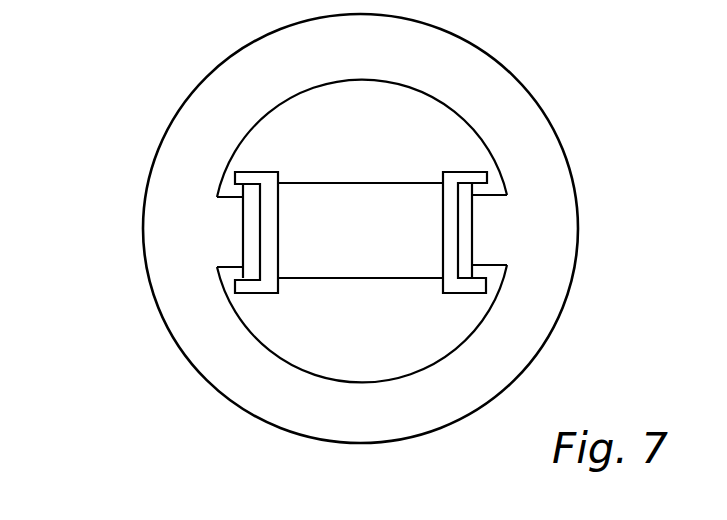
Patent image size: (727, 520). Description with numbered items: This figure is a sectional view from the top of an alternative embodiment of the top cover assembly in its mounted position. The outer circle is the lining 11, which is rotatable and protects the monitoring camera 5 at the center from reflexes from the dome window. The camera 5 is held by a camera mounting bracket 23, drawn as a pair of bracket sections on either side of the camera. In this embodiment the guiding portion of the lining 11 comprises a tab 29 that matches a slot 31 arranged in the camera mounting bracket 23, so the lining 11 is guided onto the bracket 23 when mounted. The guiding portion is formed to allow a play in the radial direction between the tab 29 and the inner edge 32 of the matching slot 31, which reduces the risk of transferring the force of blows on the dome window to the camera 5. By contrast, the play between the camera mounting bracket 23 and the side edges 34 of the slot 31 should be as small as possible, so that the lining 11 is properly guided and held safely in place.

The monitoring camera 5 is at (372, 195).
The lining 11 is at (142, 243).
The camera mounting bracket 23 is at (461, 290).
The tab 29 is at (492, 227).
The slot 31 is at (480, 182).
The inner edge 32 is at (243, 222).
The side edges 34 is at (253, 277).